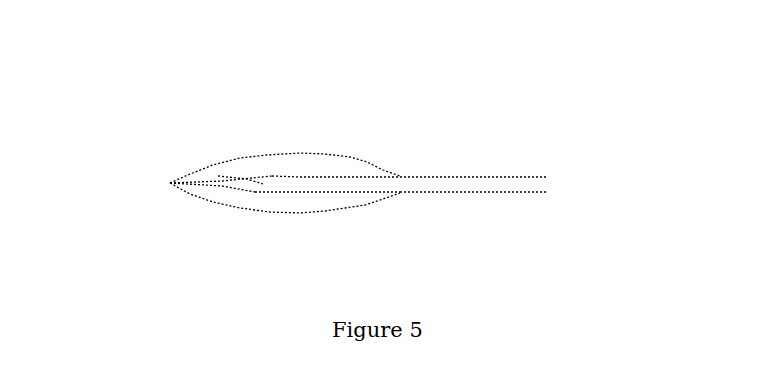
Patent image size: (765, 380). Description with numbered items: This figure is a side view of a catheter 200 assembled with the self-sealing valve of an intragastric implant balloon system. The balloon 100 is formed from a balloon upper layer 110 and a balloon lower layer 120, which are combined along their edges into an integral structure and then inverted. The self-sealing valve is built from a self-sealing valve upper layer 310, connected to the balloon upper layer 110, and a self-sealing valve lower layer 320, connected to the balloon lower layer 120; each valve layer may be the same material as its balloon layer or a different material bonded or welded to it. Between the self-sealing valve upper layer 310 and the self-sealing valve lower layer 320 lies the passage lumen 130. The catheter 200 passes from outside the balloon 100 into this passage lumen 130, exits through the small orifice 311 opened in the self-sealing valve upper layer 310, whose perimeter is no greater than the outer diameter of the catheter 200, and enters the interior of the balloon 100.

The balloon 100 is at (317, 60).
The balloon upper layer 110 is at (350, 156).
The balloon lower layer 120 is at (350, 210).
The passage lumen 130 is at (243, 180).
The catheter 200 is at (502, 165).
The self-sealing valve upper layer 310 is at (225, 183).
The small orifice 311 is at (270, 168).
The self-sealing valve lower layer 320 is at (227, 189).